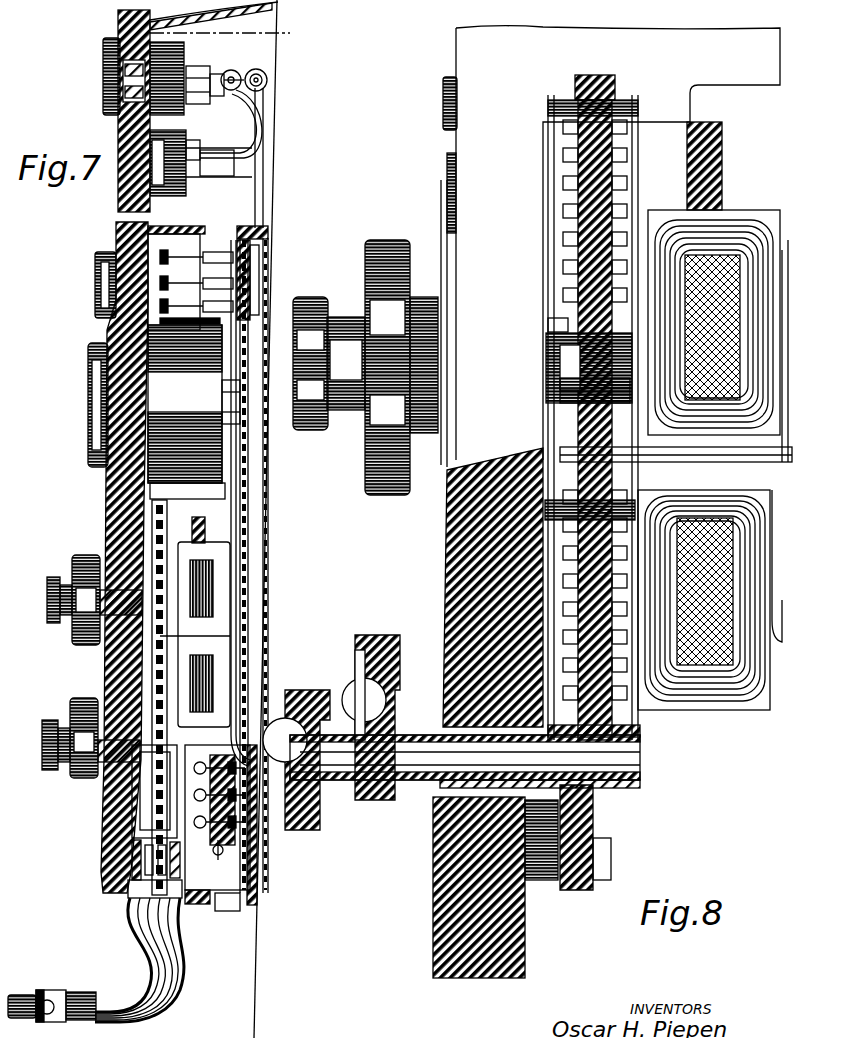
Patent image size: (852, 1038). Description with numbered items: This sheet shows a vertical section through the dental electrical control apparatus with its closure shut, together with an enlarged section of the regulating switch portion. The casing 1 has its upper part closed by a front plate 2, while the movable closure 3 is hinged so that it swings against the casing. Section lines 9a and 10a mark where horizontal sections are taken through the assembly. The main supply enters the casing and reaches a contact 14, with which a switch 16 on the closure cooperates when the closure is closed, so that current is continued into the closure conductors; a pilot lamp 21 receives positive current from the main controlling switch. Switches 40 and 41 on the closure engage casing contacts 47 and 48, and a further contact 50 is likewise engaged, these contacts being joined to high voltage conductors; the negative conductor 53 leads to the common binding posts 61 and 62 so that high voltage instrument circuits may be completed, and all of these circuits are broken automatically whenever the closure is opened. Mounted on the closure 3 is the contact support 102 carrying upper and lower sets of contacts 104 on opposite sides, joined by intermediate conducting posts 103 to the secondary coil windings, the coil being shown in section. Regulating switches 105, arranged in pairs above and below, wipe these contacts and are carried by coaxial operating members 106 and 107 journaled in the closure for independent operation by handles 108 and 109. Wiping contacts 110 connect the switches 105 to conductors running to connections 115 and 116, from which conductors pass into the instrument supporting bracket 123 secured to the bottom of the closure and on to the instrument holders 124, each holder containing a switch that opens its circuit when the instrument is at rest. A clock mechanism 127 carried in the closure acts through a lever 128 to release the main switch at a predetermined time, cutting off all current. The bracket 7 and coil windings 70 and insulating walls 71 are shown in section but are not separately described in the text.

In FIG. 7, the casing 1 is at (208, 118).
In FIG. 7, the front plate 2 is at (118, 182).
In FIG. 7, the movable closure 3 is at (108, 326).
In FIG. 8, the movable closure 3 is at (532, 918).
In FIG. 7, the bracket 7 is at (264, 185).
In FIG. 7, the section line 9a is at (108, 38).
In FIG. 7, the section line 10a is at (145, 403).
In FIG. 7, the contact 14 is at (240, 232).
In FIG. 7, the switch 16 is at (218, 256).
In FIG. 7, the pilot lamp 21 is at (96, 282).
In FIG. 7, the switch 40 is at (190, 324).
In FIG. 7, the switch 41 is at (196, 256).
In FIG. 7, the contact 47 is at (256, 290).
In FIG. 7, the contact 48 is at (262, 262).
In FIG. 7, the contact 50 is at (238, 772).
In FIG. 7, the conductor 53 is at (262, 606).
In FIG. 7, the common binding post 61 is at (238, 798).
In FIG. 7, the common binding post 62 is at (238, 826).
In FIG. 8, the coil 70 is at (735, 240).
In FIG. 8, the coil housing 71 is at (776, 238).
In FIG. 7, the contact support 102 is at (154, 791).
In FIG. 8, the contact support 102 is at (604, 724).
In FIG. 7, the intermediate conducting post 103 is at (172, 640).
In FIG. 8, the intermediate conducting post 103 is at (676, 447).
In FIG. 8, the contact 104 is at (565, 214).
In FIG. 8, the switch 105 is at (555, 266).
In FIG. 7, the operating member 106 is at (120, 676).
In FIG. 8, the operating member 106 is at (545, 382).
In FIG. 8, the operating member 107 is at (596, 768).
In FIG. 7, the handle 108 is at (82, 558).
In FIG. 8, the handle 108 is at (390, 250).
In FIG. 7, the handle 109 is at (52, 580).
In FIG. 8, the handle 109 is at (314, 300).
In FIG. 8, the wiping contact 110 is at (560, 326).
In FIG. 7, the connection 115 is at (180, 860).
In FIG. 7, the connection 116 is at (100, 856).
In FIG. 7, the instrument supporting bracket 123 is at (152, 960).
In FIG. 7, the instrument holder 124 is at (64, 1000).
In FIG. 7, the clock mechanism 127 is at (185, 404).
In FIG. 7, the lever 128 is at (230, 455).